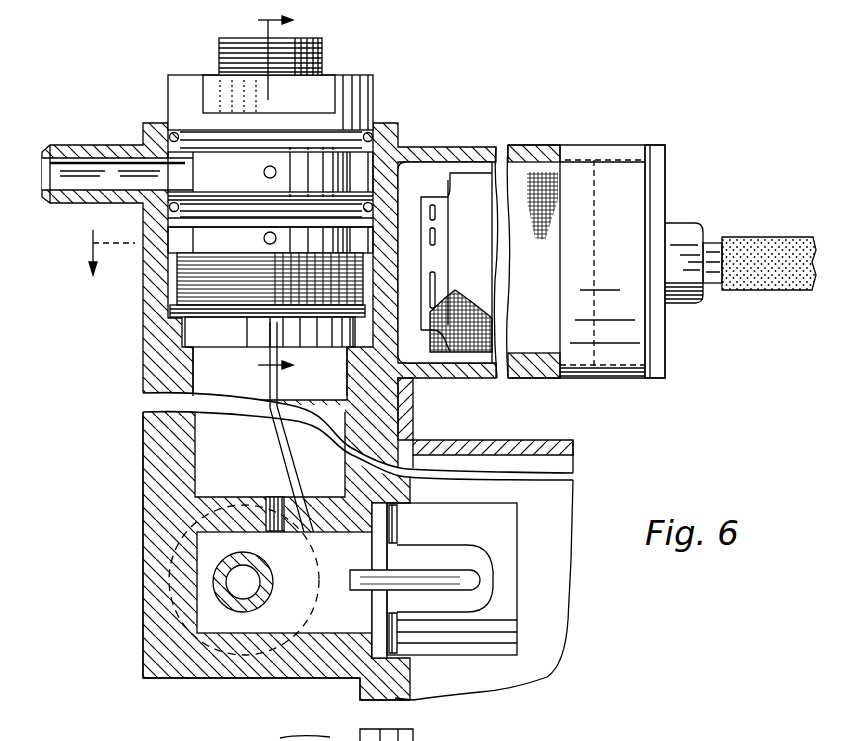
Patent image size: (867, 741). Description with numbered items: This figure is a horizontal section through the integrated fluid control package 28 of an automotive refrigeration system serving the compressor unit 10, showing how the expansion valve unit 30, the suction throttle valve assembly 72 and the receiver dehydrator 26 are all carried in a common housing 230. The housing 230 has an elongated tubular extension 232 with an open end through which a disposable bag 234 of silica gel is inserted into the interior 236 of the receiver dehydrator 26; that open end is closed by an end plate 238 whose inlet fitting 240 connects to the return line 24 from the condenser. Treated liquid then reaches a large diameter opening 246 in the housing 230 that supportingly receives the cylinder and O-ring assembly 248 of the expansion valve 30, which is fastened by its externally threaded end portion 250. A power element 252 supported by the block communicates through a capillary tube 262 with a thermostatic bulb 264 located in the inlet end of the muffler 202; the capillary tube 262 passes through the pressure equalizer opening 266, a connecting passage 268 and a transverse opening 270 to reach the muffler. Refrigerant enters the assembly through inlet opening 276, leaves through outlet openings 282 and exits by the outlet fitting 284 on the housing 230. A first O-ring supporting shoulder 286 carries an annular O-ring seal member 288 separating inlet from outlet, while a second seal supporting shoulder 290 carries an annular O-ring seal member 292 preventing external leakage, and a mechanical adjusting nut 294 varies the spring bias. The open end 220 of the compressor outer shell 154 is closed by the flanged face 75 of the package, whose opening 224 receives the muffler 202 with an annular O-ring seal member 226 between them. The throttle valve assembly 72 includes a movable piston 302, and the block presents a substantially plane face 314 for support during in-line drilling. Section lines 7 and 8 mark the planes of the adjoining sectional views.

The section line 7- 7 is at (271, 238).
The section line 8- 8 is at (287, 194).
The compressor unit 10 is at (573, 448).
The return line 24 is at (767, 243).
The receiver dehydrator 26 is at (607, 145).
The integrated fluid control package 28 is at (143, 428).
The expansion valve unit 30 is at (345, 75).
The suction throttle valve assembly 72 is at (170, 586).
The flanged face 75 is at (395, 703).
The outer shell 154 is at (470, 440).
The muffler 202 is at (620, 639).
The open end 220 is at (425, 455).
The opening 224 is at (400, 512).
The annular O-ring seal member 226 is at (400, 641).
The common housing 230 is at (150, 650).
The tubular extension 232 is at (455, 147).
The disposable bag 234 is at (532, 172).
The interior 236 is at (543, 355).
The end plate 238 is at (660, 170).
The inlet fitting 240 is at (688, 232).
The large diameter opening 246 is at (360, 178).
The cylinder and O-ring assembly 248 is at (175, 88).
The externally threaded end portion 250 is at (185, 298).
The power element 252 is at (247, 333).
The capillary tube 262 is at (283, 446).
The thermostatic bulb 264 is at (442, 570).
The pressure equalizer opening 266 is at (252, 445).
The connecting passage 268 is at (275, 495).
The opening 270 is at (343, 622).
The inlet opening 276 is at (263, 239).
The outlet openings 282 is at (263, 173).
The outlet fitting 284 is at (72, 150).
The first O-ring supporting shoulder 286 is at (178, 221).
The annular O-ring seal member 288 is at (168, 207).
The second seal supporting shoulder 290 is at (183, 140).
The annular O-ring seal member 292 is at (362, 130).
The mechanical adjusting nut 294 is at (222, 50).
The movable piston 302 is at (248, 600).
The plane face 314 is at (143, 470).